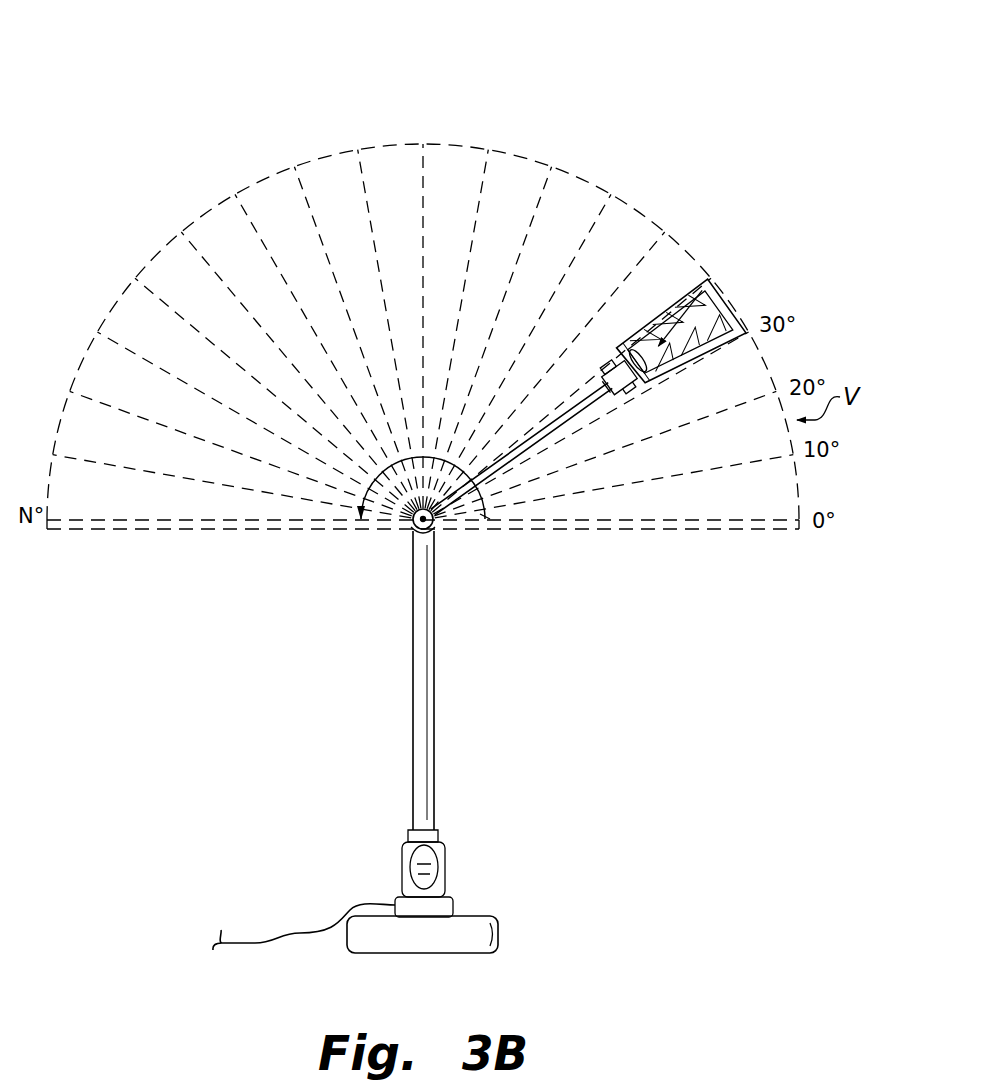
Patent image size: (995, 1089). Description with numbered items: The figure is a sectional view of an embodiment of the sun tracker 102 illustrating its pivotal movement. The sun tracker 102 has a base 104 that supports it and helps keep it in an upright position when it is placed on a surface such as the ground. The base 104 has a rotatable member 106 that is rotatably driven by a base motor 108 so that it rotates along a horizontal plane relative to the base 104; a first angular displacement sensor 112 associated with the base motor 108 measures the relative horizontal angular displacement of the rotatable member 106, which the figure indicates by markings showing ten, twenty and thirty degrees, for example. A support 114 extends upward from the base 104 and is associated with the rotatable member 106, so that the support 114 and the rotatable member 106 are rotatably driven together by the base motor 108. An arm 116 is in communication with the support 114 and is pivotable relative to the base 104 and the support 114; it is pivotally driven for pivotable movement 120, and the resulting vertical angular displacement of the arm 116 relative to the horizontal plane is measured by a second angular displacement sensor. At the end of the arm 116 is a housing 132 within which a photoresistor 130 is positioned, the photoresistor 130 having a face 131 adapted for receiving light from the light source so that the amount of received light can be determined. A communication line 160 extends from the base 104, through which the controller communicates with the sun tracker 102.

The sun tracker 102 is at (187, 93).
The base 104 is at (502, 930).
The rotatable member 106 is at (390, 860).
The base motor 108 is at (452, 913).
The first angular displacement sensor 112 is at (432, 855).
The support 114 is at (434, 666).
The arm 116 is at (558, 428).
The pivotable movement 120 is at (212, 548).
The photoresistor 130 is at (637, 380).
The face 131 is at (718, 302).
The housing 132 is at (679, 297).
The communication line 160 is at (258, 945).